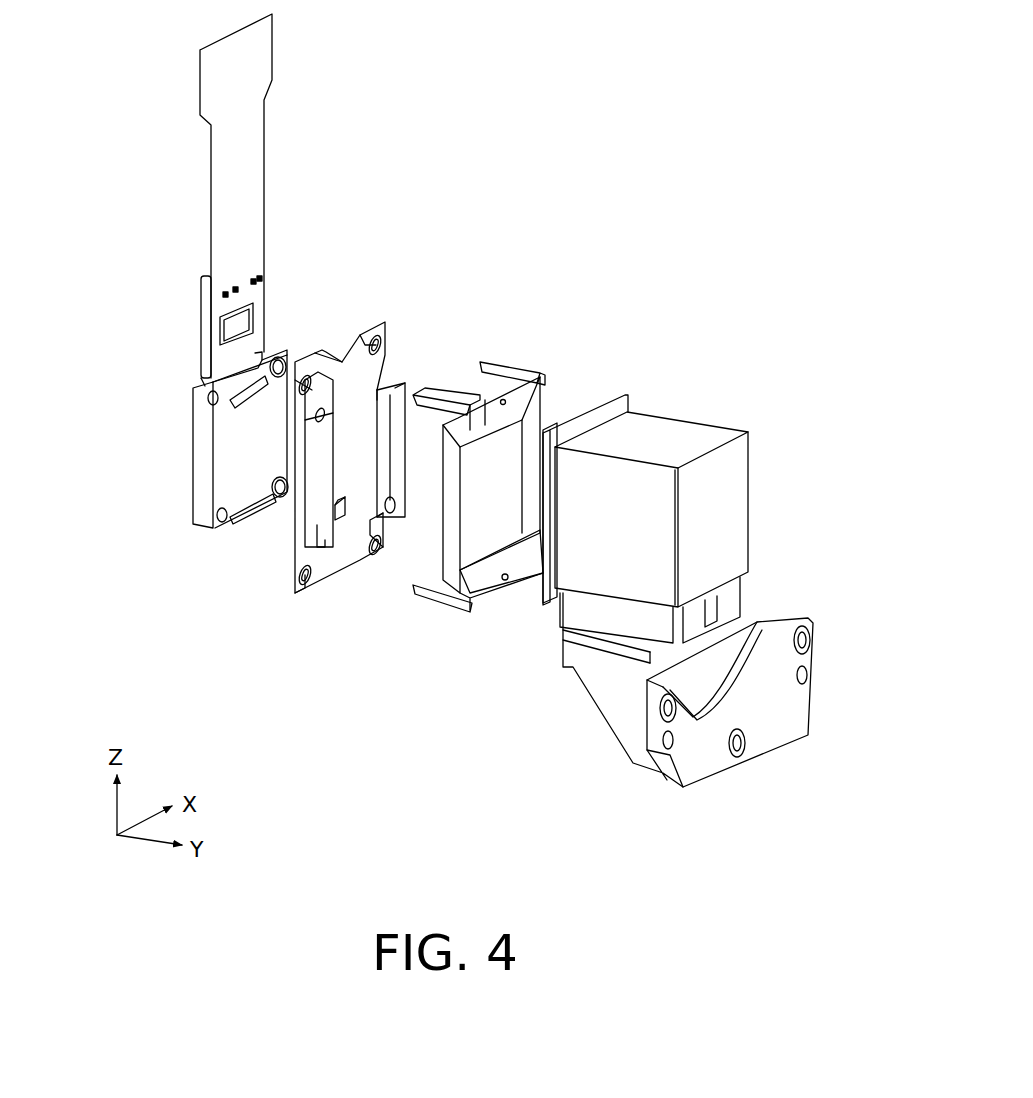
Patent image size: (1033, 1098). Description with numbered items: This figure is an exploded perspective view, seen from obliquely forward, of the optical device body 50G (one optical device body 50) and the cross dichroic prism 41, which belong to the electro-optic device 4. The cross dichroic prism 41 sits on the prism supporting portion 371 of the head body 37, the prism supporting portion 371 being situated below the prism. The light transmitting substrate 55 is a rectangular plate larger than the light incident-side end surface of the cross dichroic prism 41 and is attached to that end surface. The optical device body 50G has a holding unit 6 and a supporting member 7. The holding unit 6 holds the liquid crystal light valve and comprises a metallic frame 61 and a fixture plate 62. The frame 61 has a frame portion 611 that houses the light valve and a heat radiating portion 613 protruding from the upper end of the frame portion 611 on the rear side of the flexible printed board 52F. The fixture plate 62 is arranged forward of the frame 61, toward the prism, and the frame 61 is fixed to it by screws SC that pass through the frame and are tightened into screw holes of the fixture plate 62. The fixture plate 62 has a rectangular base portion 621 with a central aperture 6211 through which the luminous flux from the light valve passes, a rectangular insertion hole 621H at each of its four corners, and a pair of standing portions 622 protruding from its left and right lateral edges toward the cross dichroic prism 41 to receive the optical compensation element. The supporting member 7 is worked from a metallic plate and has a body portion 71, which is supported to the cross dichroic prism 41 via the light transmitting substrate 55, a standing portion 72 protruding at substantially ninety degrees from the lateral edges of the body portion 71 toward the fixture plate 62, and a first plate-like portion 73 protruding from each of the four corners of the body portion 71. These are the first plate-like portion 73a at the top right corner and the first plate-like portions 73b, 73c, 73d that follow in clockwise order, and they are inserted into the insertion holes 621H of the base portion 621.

The electro-optic device 4 is at (648, 86).
The flexible printed board 52F is at (264, 131).
The heat radiating portion 613 is at (204, 318).
The frame portion 611 is at (204, 488).
The screws SC is at (210, 426).
The frame 61 is at (184, 552).
The holding unit 6 is at (266, 359).
The fixture plate 62 is at (384, 284).
The base portion 621 is at (328, 560).
The insertion hole 621H is at (303, 585).
The standing portions 622 is at (413, 378).
The aperture 6211 is at (340, 553).
The supporting member 7 is at (553, 333).
The standing portion 72 is at (455, 512).
The body portion 71 is at (480, 588).
The first plate-like portion 73 is at (480, 465).
The first plate-like portion 73a is at (456, 390).
The first plate-like portion 73b is at (428, 598).
The first plate-like portion 73c is at (530, 475).
The first plate-like portion 73d is at (502, 366).
The light transmitting substrate 55 is at (610, 394).
The cross dichroic prism 41 is at (737, 495).
The prism supporting portion 371 is at (617, 707).
The head body 37 is at (673, 702).
The optical device body 50G is at (368, 730).
The optical device body 50 is at (568, 509).